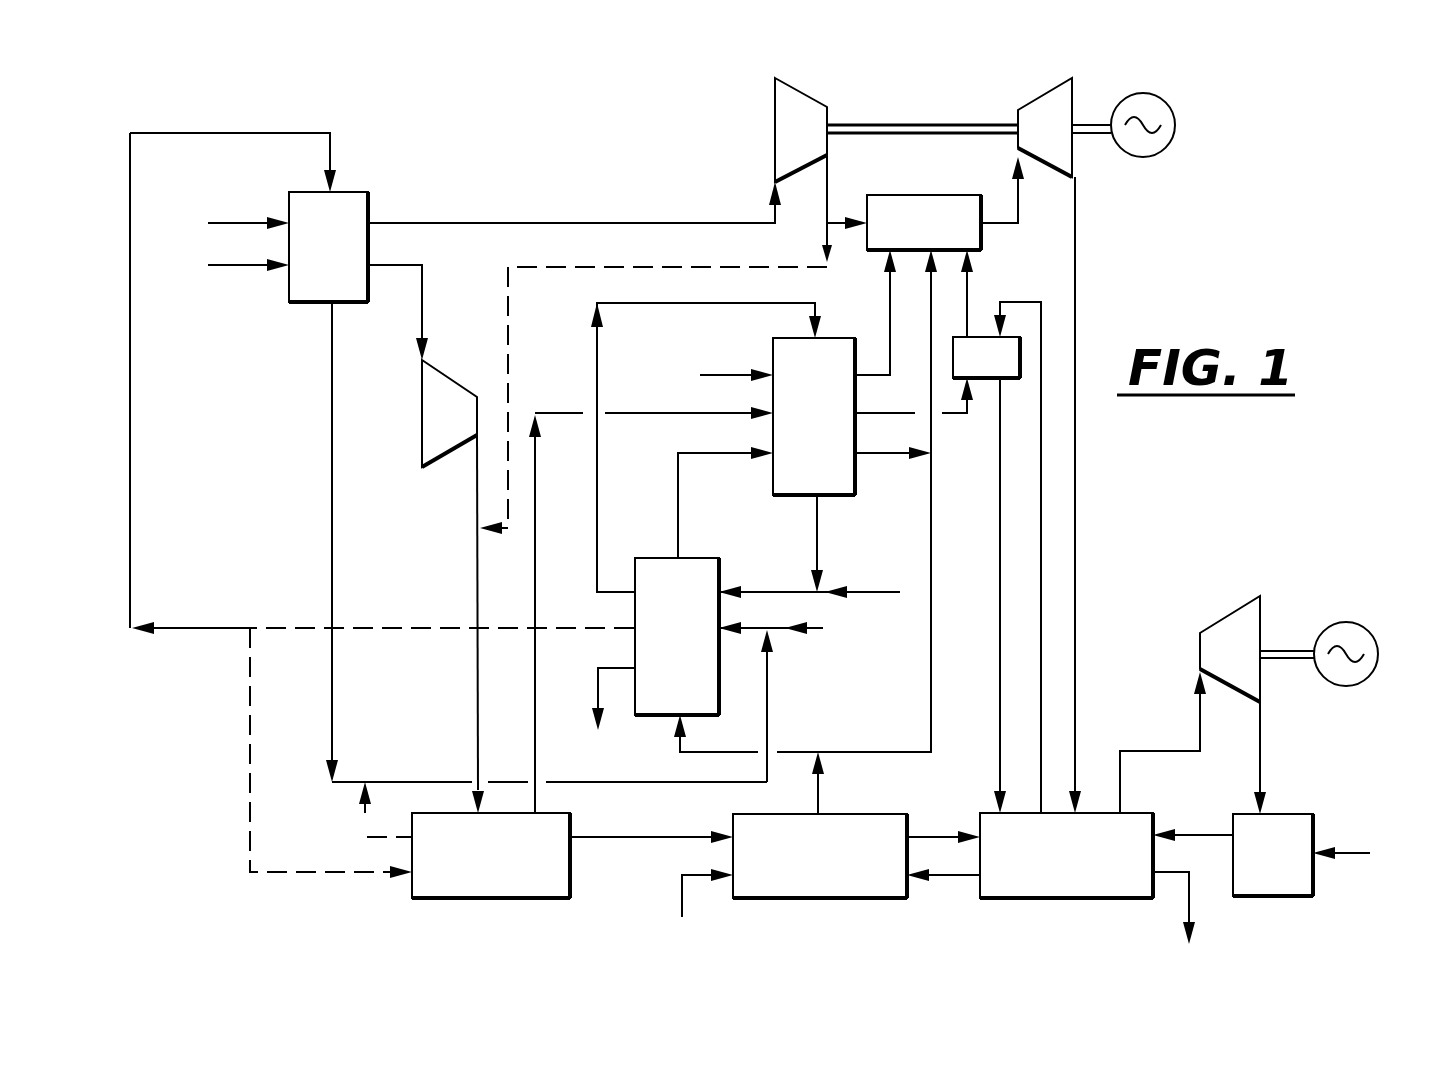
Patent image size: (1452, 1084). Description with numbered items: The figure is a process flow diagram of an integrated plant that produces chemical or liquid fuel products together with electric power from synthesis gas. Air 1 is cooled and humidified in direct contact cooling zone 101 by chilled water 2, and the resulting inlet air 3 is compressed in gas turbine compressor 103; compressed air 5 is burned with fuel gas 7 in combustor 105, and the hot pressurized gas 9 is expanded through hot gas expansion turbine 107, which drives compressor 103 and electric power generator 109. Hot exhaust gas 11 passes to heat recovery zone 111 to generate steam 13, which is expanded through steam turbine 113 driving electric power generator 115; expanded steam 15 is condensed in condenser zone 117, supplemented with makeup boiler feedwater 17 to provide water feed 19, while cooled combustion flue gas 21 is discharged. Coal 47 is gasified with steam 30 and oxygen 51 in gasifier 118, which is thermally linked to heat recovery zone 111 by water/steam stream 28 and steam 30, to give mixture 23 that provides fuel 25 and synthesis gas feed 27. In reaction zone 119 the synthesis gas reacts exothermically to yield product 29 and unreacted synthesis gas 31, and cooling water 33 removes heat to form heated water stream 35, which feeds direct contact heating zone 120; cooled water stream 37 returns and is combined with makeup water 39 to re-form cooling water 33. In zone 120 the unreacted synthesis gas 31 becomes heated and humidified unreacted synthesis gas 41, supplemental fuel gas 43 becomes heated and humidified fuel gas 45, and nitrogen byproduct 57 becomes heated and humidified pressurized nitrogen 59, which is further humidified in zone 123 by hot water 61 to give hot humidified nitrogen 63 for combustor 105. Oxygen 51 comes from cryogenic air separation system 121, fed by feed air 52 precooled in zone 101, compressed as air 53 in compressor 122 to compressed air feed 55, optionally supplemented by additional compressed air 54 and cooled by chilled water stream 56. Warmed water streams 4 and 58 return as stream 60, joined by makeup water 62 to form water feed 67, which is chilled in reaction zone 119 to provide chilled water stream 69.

The air 1 is at (224, 224).
The chilled water 2 is at (334, 150).
The inlet air 3 is at (488, 226).
The warmed water stream 4 is at (330, 392).
The compressed air 5 is at (830, 180).
The fuel gas 7 is at (929, 328).
The hot pressurized gas 9 is at (1020, 206).
The hot exhaust gas 11 is at (1077, 280).
The steam 13 is at (1154, 750).
The expanded steam 15 is at (1262, 754).
The makeup boiler feedwater 17 is at (1354, 848).
The water feed 19 is at (1206, 828).
The cooled combustion flue gas 21 is at (1192, 897).
The mixture 23 is at (822, 792).
The fuel 25 is at (932, 680).
The synthesis gas feed 27 is at (796, 752).
The water/steam stream 28 is at (939, 834).
The final chemical or liquid fuel product 29 is at (596, 672).
The steam 30 is at (955, 877).
The unreacted synthesis gas 31 is at (680, 525).
The cooling water 33 is at (773, 594).
The heated water stream 35 is at (596, 498).
The cooled water stream 37 is at (820, 527).
The makeup water 39 is at (900, 592).
The heated and humidified unreacted synthesis gas 41 is at (888, 455).
The supplemental fuel gas 43 is at (724, 372).
The heated and humidified fuel gas 45 is at (888, 292).
The coal 47 is at (681, 893).
The oxygen 51 is at (657, 834).
The feed air 52 is at (255, 280).
The air 53 is at (424, 300).
The additional compressed air 54 is at (510, 356).
The compressed air feed 55 is at (479, 511).
The chilled water stream 56 is at (250, 746).
The nitrogen byproduct 57 is at (538, 582).
The warmed water stream 58 is at (364, 838).
The heated and humidified pressurized nitrogen 59 is at (942, 415).
The return stream 60 is at (416, 780).
The hot water 61 is at (1043, 530).
The makeup water 62 is at (815, 632).
The hot humidified nitrogen 63 is at (970, 292).
The water feed 67 is at (757, 638).
The chilled water stream 69 is at (414, 632).
The direct contact cooling zone 101 is at (352, 270).
The gas turbine compressor 103 is at (774, 148).
The combustor 105 is at (950, 239).
The hot gas expansion turbine 107 is at (1075, 160).
The electric power generator 109 is at (1176, 124).
The heat recovery zone 111 is at (1072, 898).
The steam turbine 113 is at (1200, 642).
The electric power generator 115 is at (1358, 686).
The condenser zone 117 is at (1298, 870).
The gasifier 118 is at (838, 898).
The reaction zone 119 is at (700, 655).
The direct contact heating zone 120 is at (838, 427).
The cryogenic air separation system 121 is at (513, 898).
The compressor 122 is at (424, 394).
The zone 123 is at (1010, 374).